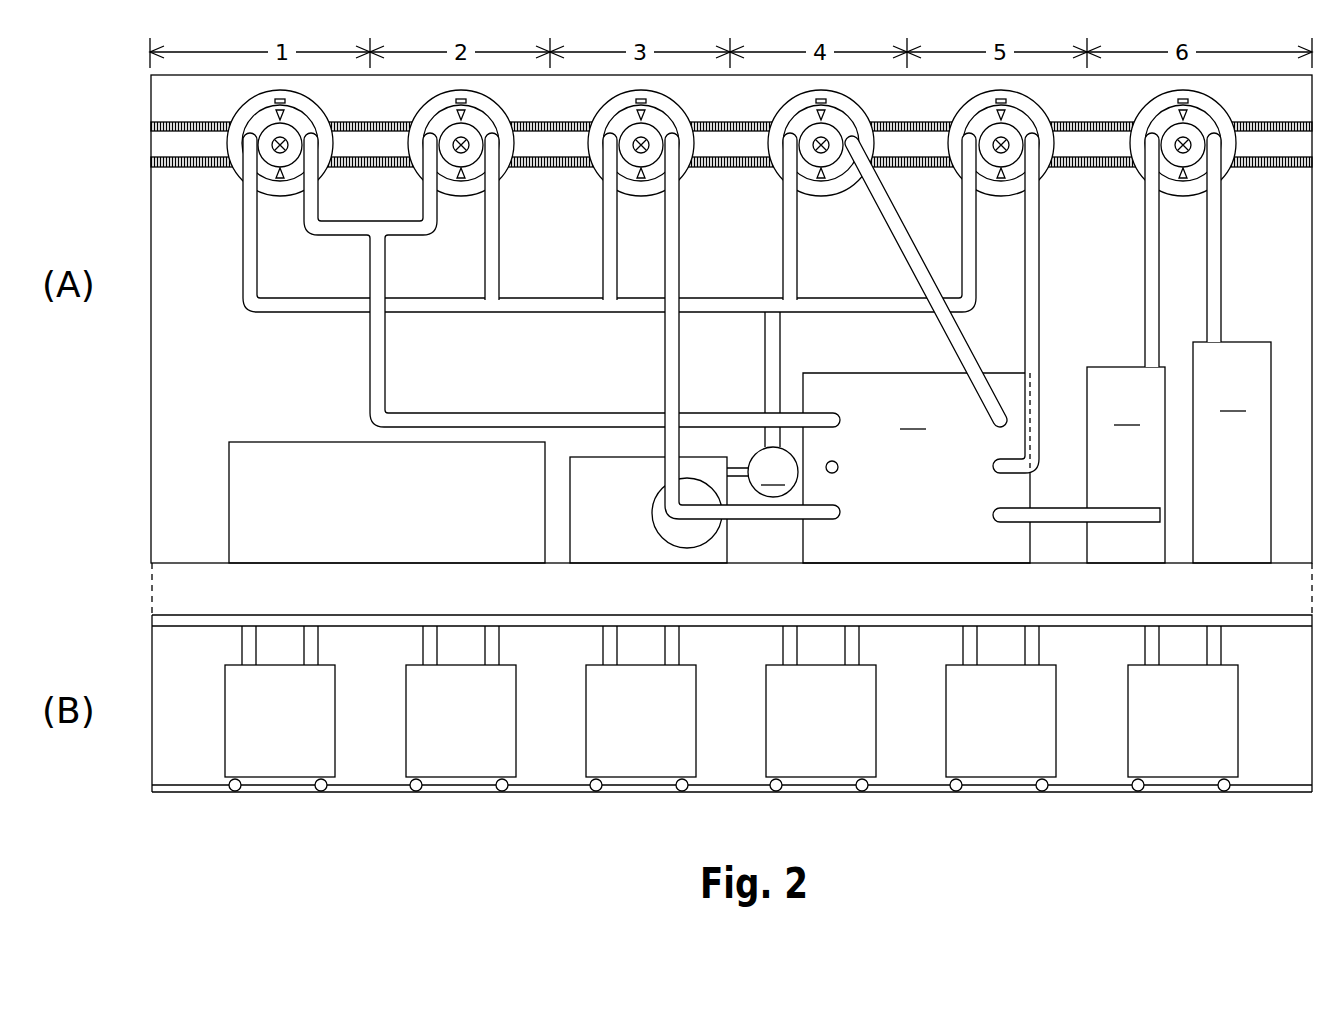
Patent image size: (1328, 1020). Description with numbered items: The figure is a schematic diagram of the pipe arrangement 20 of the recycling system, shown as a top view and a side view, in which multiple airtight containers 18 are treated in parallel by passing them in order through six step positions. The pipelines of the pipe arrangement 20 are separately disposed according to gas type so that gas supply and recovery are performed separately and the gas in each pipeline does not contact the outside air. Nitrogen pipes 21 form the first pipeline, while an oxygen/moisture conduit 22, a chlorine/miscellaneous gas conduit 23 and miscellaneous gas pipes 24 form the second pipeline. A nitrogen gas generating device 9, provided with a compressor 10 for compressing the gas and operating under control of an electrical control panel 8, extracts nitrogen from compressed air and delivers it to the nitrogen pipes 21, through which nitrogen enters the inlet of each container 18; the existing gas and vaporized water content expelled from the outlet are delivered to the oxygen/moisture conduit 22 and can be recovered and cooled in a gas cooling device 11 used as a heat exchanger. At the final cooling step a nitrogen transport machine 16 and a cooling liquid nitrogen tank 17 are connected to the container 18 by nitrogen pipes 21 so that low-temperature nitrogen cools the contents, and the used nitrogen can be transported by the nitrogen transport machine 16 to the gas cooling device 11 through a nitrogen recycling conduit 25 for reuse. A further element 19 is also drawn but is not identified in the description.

The electrical control panel 8 is at (270, 442).
The nitrogen gas generating device 9 is at (650, 457).
The compressor 10 is at (762, 472).
The gas cooling device 11 is at (916, 468).
The nitrogen transport machine 16 is at (1126, 465).
The cooling liquid nitrogen tank 17 is at (1232, 452).
The container 18 is at (238, 188).
The rail 19 is at (205, 168).
The pipe arrangement 20 is at (150, 620).
The nitrogen pipes 21 is at (243, 283).
The oxygen/moisture conduit 22 is at (370, 347).
The chlorine/miscellaneous gas conduit 23 is at (665, 345).
The miscellaneous gas pipes 24 is at (945, 338).
The nitrogen recycling conduit 25 is at (1055, 508).